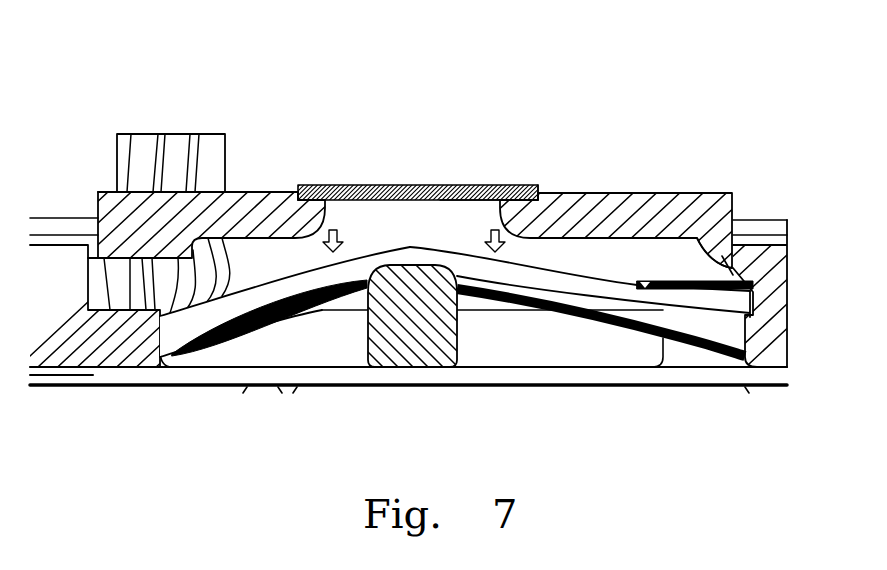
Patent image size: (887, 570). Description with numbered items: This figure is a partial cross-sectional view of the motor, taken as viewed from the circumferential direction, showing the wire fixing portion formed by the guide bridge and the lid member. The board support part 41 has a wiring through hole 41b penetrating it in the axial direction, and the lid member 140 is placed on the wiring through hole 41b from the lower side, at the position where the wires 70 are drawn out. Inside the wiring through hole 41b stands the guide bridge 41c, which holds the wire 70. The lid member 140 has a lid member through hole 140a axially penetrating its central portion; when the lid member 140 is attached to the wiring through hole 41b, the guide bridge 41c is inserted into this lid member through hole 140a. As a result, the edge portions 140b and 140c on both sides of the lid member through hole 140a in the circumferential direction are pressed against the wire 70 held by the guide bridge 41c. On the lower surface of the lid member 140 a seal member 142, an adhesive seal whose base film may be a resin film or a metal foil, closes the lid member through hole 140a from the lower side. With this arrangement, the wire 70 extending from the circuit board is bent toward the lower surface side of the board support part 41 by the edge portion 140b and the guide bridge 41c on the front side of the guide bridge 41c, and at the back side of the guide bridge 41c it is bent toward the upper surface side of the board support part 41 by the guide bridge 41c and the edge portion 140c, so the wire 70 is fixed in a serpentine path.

The wire 70 is at (173, 126).
The lid member 140 is at (678, 199).
The lid member through hole 140a is at (473, 196).
The edge portion 140b is at (515, 197).
The edge portion 140c is at (307, 185).
The seal member 142 is at (347, 185).
The board support part 41 is at (784, 288).
The wiring through hole 41b is at (712, 240).
The guide bridge 41c is at (418, 338).